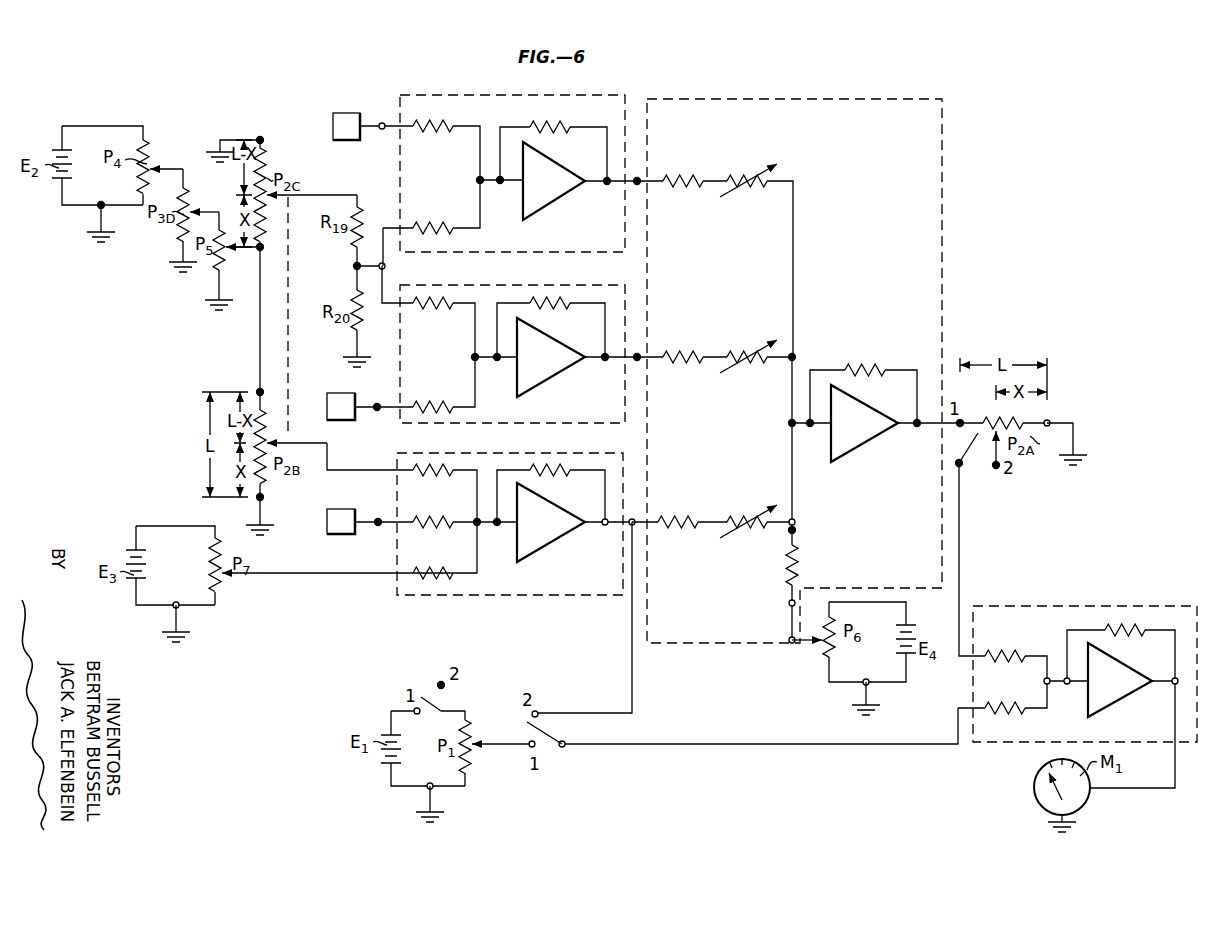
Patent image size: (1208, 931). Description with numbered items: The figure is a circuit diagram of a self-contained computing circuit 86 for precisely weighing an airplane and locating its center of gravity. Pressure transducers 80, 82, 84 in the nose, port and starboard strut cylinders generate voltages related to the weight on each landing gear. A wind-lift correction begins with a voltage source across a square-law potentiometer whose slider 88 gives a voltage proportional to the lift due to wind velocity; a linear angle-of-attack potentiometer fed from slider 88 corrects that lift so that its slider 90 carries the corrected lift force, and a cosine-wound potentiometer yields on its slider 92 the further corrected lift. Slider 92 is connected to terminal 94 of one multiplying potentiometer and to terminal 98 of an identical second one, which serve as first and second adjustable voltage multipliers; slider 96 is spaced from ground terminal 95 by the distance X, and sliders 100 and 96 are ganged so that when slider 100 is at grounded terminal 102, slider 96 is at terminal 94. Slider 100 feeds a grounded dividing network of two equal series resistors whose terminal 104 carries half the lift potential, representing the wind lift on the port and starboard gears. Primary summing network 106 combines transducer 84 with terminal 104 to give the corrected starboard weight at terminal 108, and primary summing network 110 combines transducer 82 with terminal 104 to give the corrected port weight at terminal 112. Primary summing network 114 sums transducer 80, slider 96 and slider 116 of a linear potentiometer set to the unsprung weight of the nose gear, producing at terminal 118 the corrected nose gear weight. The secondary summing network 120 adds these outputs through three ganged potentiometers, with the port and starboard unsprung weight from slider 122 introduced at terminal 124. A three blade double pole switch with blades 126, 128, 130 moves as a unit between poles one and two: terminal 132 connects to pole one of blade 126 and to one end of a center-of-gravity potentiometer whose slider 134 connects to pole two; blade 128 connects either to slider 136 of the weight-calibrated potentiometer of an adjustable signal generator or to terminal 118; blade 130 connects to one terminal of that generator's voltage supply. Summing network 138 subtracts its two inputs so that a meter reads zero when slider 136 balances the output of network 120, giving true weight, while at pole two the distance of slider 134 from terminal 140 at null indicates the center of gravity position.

The pressure transducer 80 is at (342, 509).
The pressure transducer 82 is at (340, 393).
The pressure transducer 84 is at (343, 113).
The computing circuit 86 is at (900, 143).
The slider 88 is at (164, 165).
The slider 90 is at (204, 211).
The slider 92 is at (237, 258).
The terminal 94 is at (273, 384).
The ground terminal 95 is at (273, 499).
The slider 96 is at (290, 443).
The terminal 98 is at (272, 248).
The slider 100 is at (325, 195).
The grounded terminal 102 is at (266, 142).
The terminal 104 is at (355, 266).
The primary summing network 106 is at (579, 95).
The terminal 108 is at (637, 181).
The primary summing network 110 is at (579, 285).
The terminal 112 is at (637, 359).
The primary summing network 114 is at (579, 453).
The slider 116 is at (226, 580).
The terminal 118 is at (629, 526).
The secondary summing network 120 is at (890, 99).
The slider 122 is at (814, 645).
The terminal 124 is at (792, 640).
The switch blade 126 is at (970, 437).
The switch blade 128 is at (552, 734).
The switch blade 130 is at (441, 711).
The terminal 132 is at (965, 418).
The slider 134 is at (997, 462).
The slider 136 is at (479, 744).
The summing network 138 is at (1002, 606).
The terminal 140 is at (1048, 422).